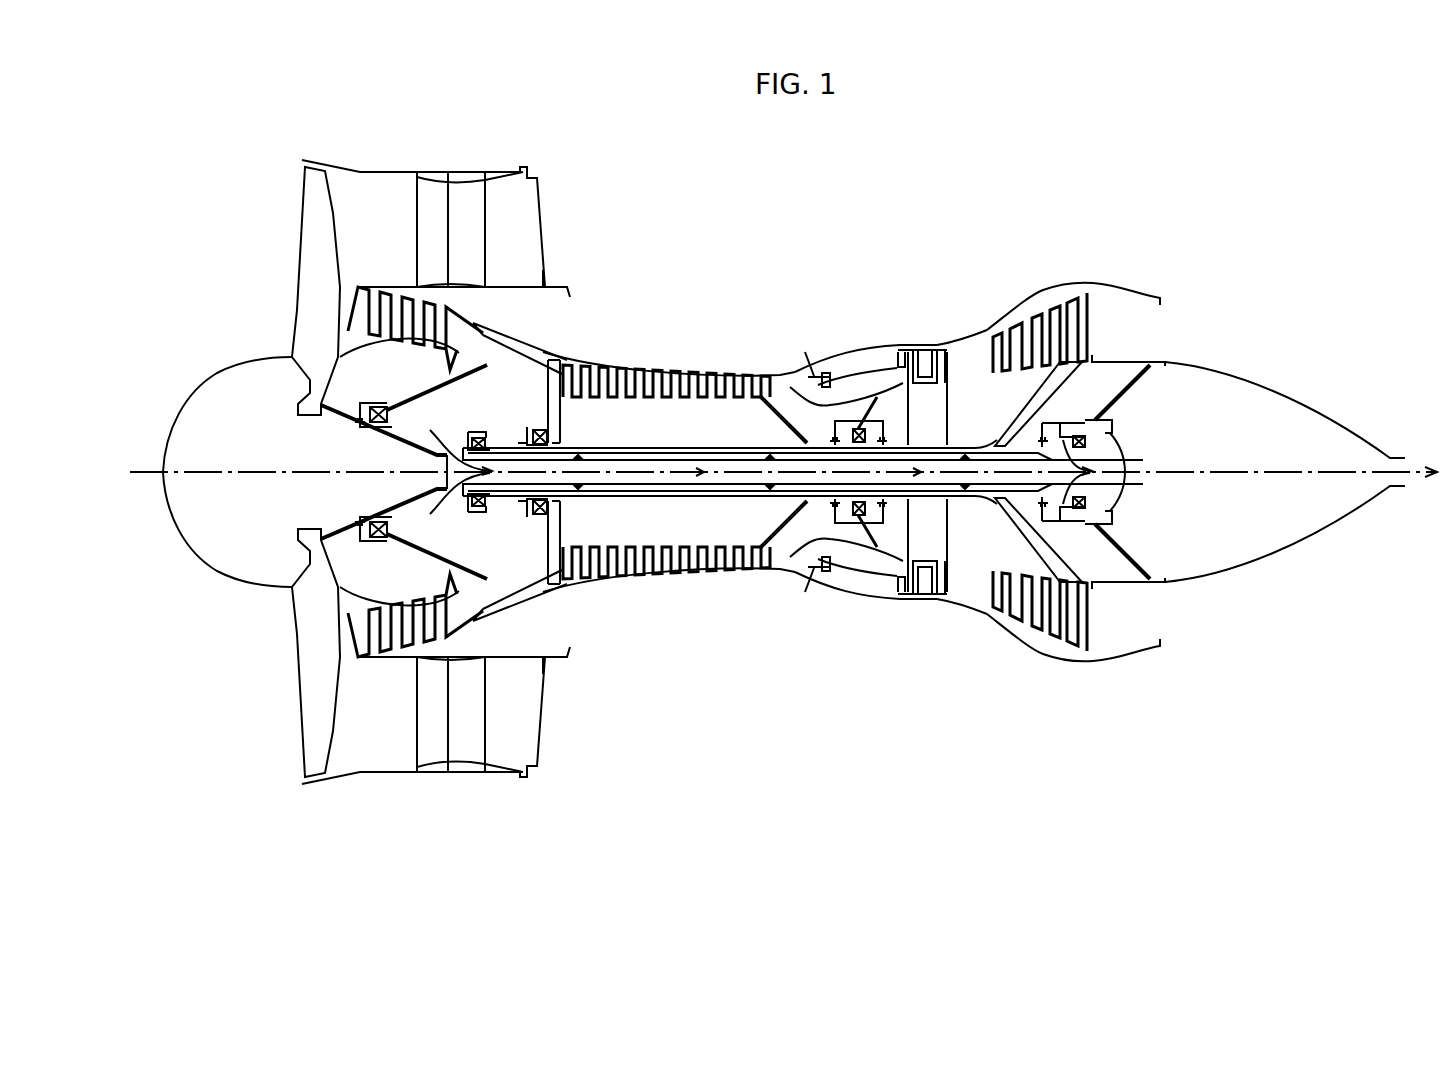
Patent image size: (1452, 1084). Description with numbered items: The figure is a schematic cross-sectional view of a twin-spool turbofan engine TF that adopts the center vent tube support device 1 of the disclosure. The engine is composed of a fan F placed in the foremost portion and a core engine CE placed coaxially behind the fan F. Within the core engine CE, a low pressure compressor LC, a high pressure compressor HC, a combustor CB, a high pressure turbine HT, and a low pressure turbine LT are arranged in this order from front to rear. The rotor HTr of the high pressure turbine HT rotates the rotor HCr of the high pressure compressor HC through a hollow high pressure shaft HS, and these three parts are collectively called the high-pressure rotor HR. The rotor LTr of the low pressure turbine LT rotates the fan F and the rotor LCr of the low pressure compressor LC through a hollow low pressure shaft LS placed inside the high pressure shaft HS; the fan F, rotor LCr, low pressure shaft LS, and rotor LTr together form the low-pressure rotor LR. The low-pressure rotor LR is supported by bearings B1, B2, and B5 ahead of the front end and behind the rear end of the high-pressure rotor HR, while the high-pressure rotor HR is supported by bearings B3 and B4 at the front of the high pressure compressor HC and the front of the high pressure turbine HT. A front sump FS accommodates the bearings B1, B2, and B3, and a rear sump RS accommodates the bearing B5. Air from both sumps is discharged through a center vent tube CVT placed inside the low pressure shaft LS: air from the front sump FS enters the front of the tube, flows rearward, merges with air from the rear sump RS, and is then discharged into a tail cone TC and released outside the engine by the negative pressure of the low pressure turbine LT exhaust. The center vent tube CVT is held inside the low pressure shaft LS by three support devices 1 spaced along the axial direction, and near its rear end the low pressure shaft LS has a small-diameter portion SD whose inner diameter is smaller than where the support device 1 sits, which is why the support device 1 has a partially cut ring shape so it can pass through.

The turbofan engine TF is at (1250, 222).
The fan F is at (282, 705).
The front sump FS is at (443, 407).
The bearing B1 is at (378, 404).
The bearing B2 is at (484, 430).
The bearing B3 is at (541, 428).
The bearing B4 is at (858, 428).
The bearing B5 is at (1080, 436).
The rotor of the low pressure compressor LCr is at (450, 640).
The low-pressure rotor LR is at (716, 553).
The low pressure shaft LS is at (657, 447).
The center vent tube CVT is at (712, 447).
The support device 1 is at (967, 456).
The core engine CE is at (505, 880).
The low pressure compressor LC is at (453, 607).
The high pressure compressor HC is at (682, 592).
The rotor of the high pressure compressor HCr is at (636, 523).
The high-pressure rotor HR is at (747, 525).
The high pressure shaft HS is at (792, 526).
The rotor of the high pressure turbine HTr is at (912, 560).
The combustor CB is at (833, 600).
The high pressure turbine HT is at (928, 598).
The low pressure turbine LT is at (1052, 672).
The rotor of the low pressure turbine LTr is at (1022, 540).
The rear sump RS is at (1065, 360).
The small-diameter portion SD is at (1090, 580).
The tail cone TC is at (1262, 385).